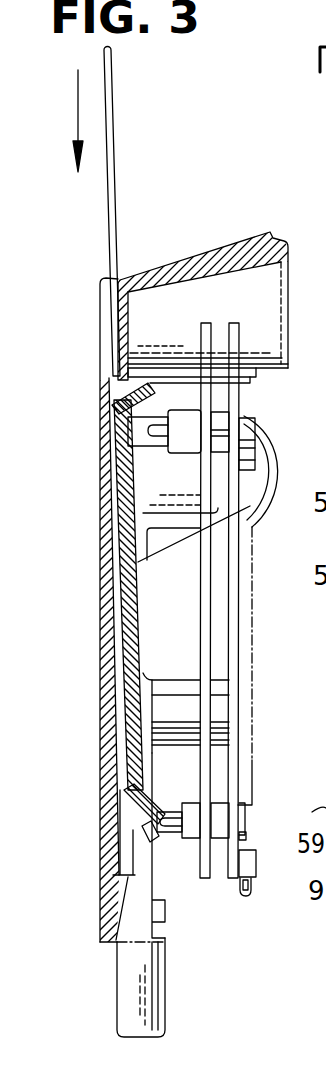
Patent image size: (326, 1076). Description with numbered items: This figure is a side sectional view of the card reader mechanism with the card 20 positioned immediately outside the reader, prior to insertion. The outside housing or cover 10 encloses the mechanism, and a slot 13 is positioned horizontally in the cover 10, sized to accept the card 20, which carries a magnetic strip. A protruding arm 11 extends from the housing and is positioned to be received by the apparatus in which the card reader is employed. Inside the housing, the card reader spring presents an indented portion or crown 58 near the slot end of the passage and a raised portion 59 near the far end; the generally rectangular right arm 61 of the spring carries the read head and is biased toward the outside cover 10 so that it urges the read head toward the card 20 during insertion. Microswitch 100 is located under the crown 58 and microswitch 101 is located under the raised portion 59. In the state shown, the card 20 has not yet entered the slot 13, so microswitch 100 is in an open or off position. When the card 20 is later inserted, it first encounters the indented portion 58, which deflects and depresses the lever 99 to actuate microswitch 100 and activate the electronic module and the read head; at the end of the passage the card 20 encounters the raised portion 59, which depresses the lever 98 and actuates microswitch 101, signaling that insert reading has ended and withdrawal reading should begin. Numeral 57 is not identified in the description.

The outside housing or cover 10 is at (172, 266).
The protruding arm 11 is at (130, 988).
The slot 13 is at (117, 398).
The card 20 is at (116, 165).
The housing wall 57 is at (152, 532).
The indented portion (crown) 58 is at (112, 447).
The raised portion 59 is at (123, 797).
The right arm 61 is at (143, 580).
The lever 98 is at (172, 836).
The lever 99 is at (145, 386).
The microswitch 100 is at (172, 416).
The microswitch 101 is at (197, 840).